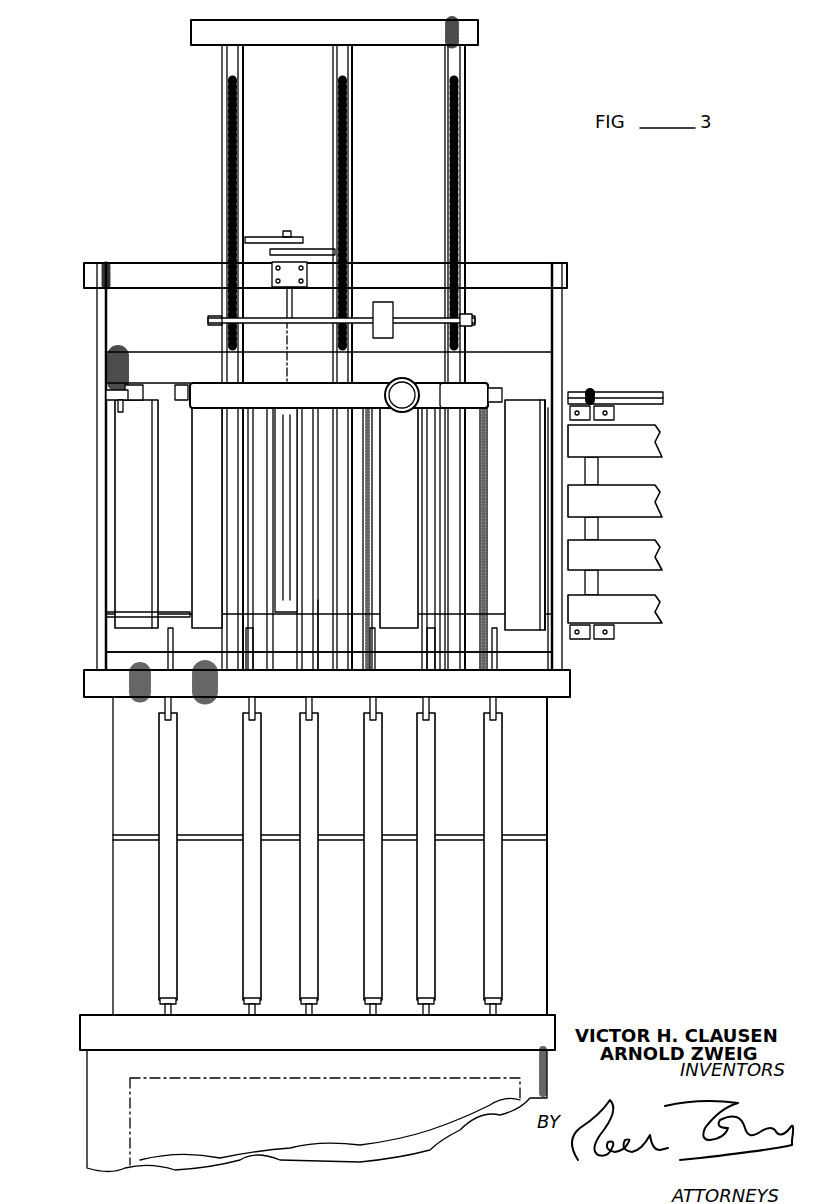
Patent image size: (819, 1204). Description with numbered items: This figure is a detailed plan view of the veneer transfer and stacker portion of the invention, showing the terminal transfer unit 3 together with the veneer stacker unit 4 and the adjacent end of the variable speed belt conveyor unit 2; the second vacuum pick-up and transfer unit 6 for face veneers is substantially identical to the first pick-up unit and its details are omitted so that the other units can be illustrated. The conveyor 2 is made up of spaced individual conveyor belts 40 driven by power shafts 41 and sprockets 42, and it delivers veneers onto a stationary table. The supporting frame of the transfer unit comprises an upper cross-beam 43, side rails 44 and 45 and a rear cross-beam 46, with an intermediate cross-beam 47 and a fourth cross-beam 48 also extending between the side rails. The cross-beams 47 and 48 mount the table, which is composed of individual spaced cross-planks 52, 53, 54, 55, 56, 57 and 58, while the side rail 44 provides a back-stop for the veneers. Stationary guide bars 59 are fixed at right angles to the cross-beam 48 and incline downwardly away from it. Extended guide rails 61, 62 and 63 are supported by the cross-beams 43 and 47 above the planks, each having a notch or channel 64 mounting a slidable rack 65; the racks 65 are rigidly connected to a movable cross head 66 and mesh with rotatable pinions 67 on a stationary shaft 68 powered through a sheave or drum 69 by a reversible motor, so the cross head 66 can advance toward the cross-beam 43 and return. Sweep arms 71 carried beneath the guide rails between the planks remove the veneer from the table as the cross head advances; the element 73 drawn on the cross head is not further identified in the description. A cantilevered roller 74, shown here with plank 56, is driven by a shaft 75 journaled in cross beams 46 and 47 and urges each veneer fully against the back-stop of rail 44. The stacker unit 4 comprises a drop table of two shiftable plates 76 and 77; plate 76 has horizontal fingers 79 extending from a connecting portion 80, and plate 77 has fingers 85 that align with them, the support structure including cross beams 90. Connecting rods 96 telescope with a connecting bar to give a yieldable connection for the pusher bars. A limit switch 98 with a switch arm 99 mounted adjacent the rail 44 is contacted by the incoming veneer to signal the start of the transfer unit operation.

The variable speed belt conveyor unit 2 is at (628, 634).
The terminal transfer unit 3 is at (76, 474).
The veneer stacker unit 4 is at (100, 900).
The second vacuum pick-up and transfer unit 6 is at (442, 1140).
The conveyor belts 40 is at (648, 500).
The power shafts 41 is at (598, 583).
The sprockets 42 is at (585, 392).
The upper cross-beam 43 is at (562, 698).
The side rail 44 is at (96, 315).
The side rail 45 is at (562, 318).
The rear cross-beam 46 is at (521, 268).
The intermediate cross-beam 47 is at (148, 362).
The fourth cross-beam 48 is at (176, 612).
The cross-plank 52 is at (531, 536).
The cross-plank 53 is at (528, 515).
The cross-plank 54 is at (407, 576).
The cross-plank 55 is at (328, 650).
The cross-plank 56 is at (300, 420).
The cross-plank 57 is at (215, 576).
The cross-plank 58 is at (140, 576).
The stationary guide bars 59 is at (167, 640).
The extended guide rail 61 is at (465, 205).
The extended guide rail 62 is at (352, 202).
The extended guide rail 63 is at (245, 205).
The notch or channel 64 is at (245, 640).
The slidable rack 65 is at (235, 170).
The movable cross head 66 is at (468, 395).
The rotatable pinions 67 is at (468, 314).
The stationary shaft 68 is at (420, 316).
The sheave or drum 69 is at (384, 310).
The sweep arms 71 is at (180, 400).
The pivot bushing 73 is at (400, 388).
The cantilevered rollers 74 is at (290, 440).
The shafts 75 is at (292, 305).
The shiftable plate 76 is at (550, 786).
The shiftable plate 77 is at (549, 922).
The fingers 79 is at (470, 803).
The connecting portion 80 is at (262, 665).
The fingers 85 is at (478, 893).
The cross beams 90 is at (550, 1020).
The connecting rods 96 is at (175, 1008).
The limit switch 98 is at (110, 397).
The switch arm 99 is at (126, 408).